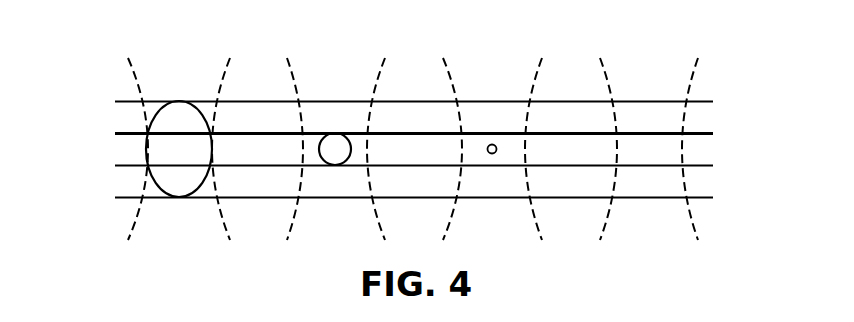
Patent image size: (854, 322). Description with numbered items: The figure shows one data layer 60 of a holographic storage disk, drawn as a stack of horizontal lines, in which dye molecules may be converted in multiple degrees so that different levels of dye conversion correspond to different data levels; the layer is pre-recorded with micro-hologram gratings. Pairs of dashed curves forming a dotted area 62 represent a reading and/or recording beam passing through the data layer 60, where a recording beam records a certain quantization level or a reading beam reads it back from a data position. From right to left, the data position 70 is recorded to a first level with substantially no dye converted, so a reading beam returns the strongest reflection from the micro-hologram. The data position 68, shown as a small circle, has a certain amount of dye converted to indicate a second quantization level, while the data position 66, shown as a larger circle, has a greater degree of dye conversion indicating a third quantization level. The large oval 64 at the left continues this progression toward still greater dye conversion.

The data layer 60 is at (93, 99).
The dotted area 62 is at (135, 232).
The large oval defect 64 is at (179, 97).
The data position 66 is at (338, 130).
The data position 68 is at (493, 138).
The data position 70 is at (650, 97).